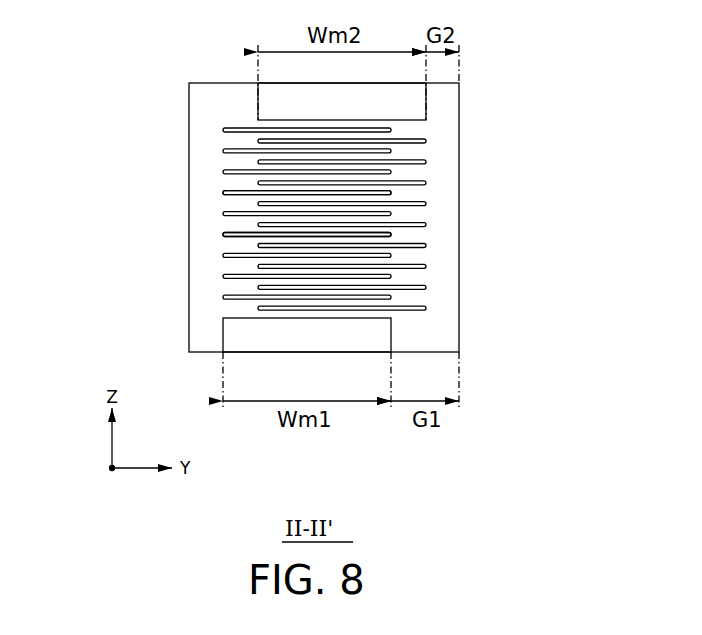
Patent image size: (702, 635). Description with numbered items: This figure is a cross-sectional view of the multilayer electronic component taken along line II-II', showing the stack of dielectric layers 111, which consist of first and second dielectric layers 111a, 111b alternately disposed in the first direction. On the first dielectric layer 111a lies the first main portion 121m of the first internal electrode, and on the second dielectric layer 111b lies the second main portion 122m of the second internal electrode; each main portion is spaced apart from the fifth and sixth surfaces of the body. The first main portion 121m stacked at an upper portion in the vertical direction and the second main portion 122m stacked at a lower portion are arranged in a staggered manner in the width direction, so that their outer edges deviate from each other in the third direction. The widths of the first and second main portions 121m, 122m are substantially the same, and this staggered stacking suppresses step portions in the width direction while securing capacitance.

The dielectric layers 111 is at (97, 215).
The first dielectric layer 111a is at (230, 195).
The second dielectric layer 111b is at (230, 230).
The first main portion 121m is at (232, 179).
The second main portion 122m is at (412, 121).